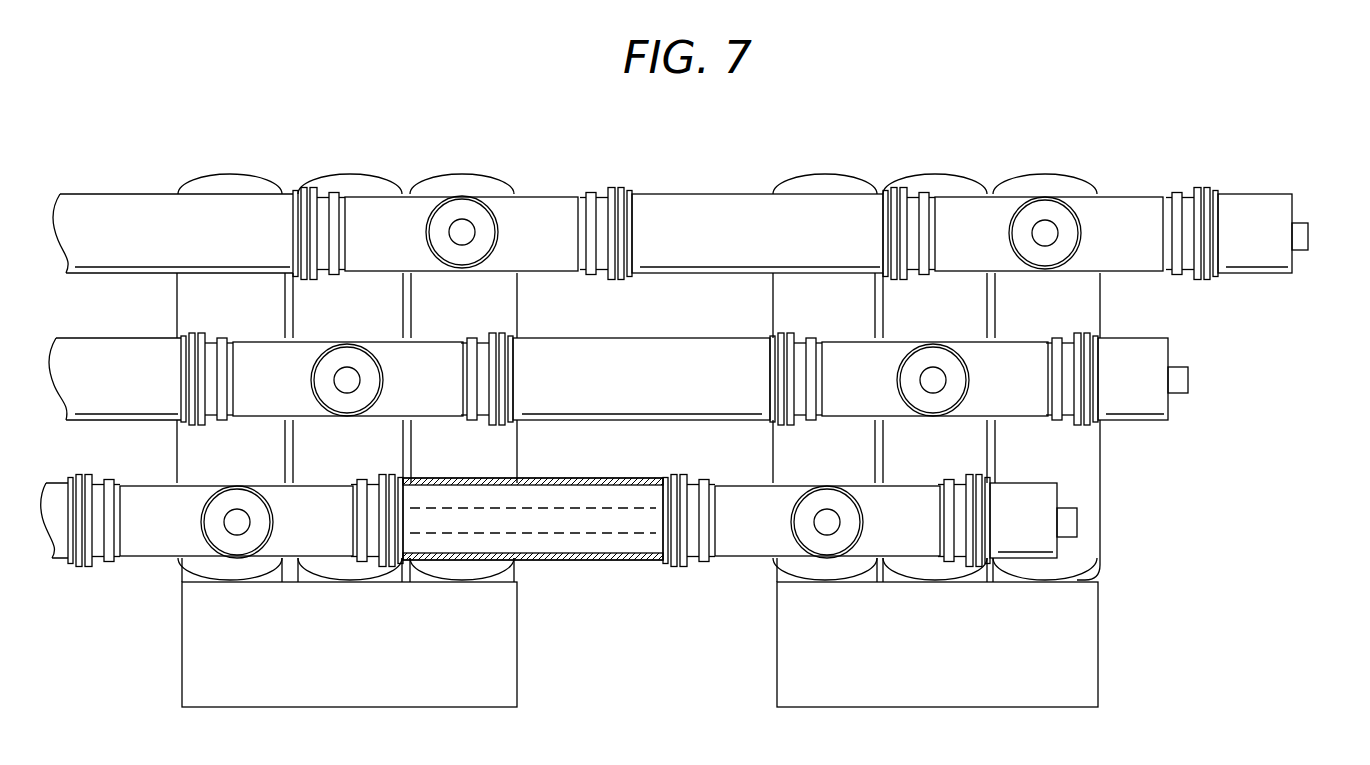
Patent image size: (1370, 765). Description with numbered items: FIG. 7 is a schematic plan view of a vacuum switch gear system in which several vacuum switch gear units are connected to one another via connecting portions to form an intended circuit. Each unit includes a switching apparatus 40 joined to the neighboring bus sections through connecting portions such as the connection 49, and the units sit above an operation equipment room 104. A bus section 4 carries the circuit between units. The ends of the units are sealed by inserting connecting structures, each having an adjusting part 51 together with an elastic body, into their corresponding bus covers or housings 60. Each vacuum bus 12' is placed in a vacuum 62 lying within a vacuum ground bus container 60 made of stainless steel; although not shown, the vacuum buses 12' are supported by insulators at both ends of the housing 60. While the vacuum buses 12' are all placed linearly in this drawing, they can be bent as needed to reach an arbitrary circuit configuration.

The main bus 4 is at (518, 430).
The circuit breaker 40 is at (387, 364).
The connection flange 49 is at (632, 192).
The adjusting part 51 is at (1310, 237).
The vacuum ground bus container 60 is at (610, 478).
The vacuum 62 is at (643, 547).
The vacuum bus 12' is at (533, 566).
The operation equipment room 104 is at (517, 622).